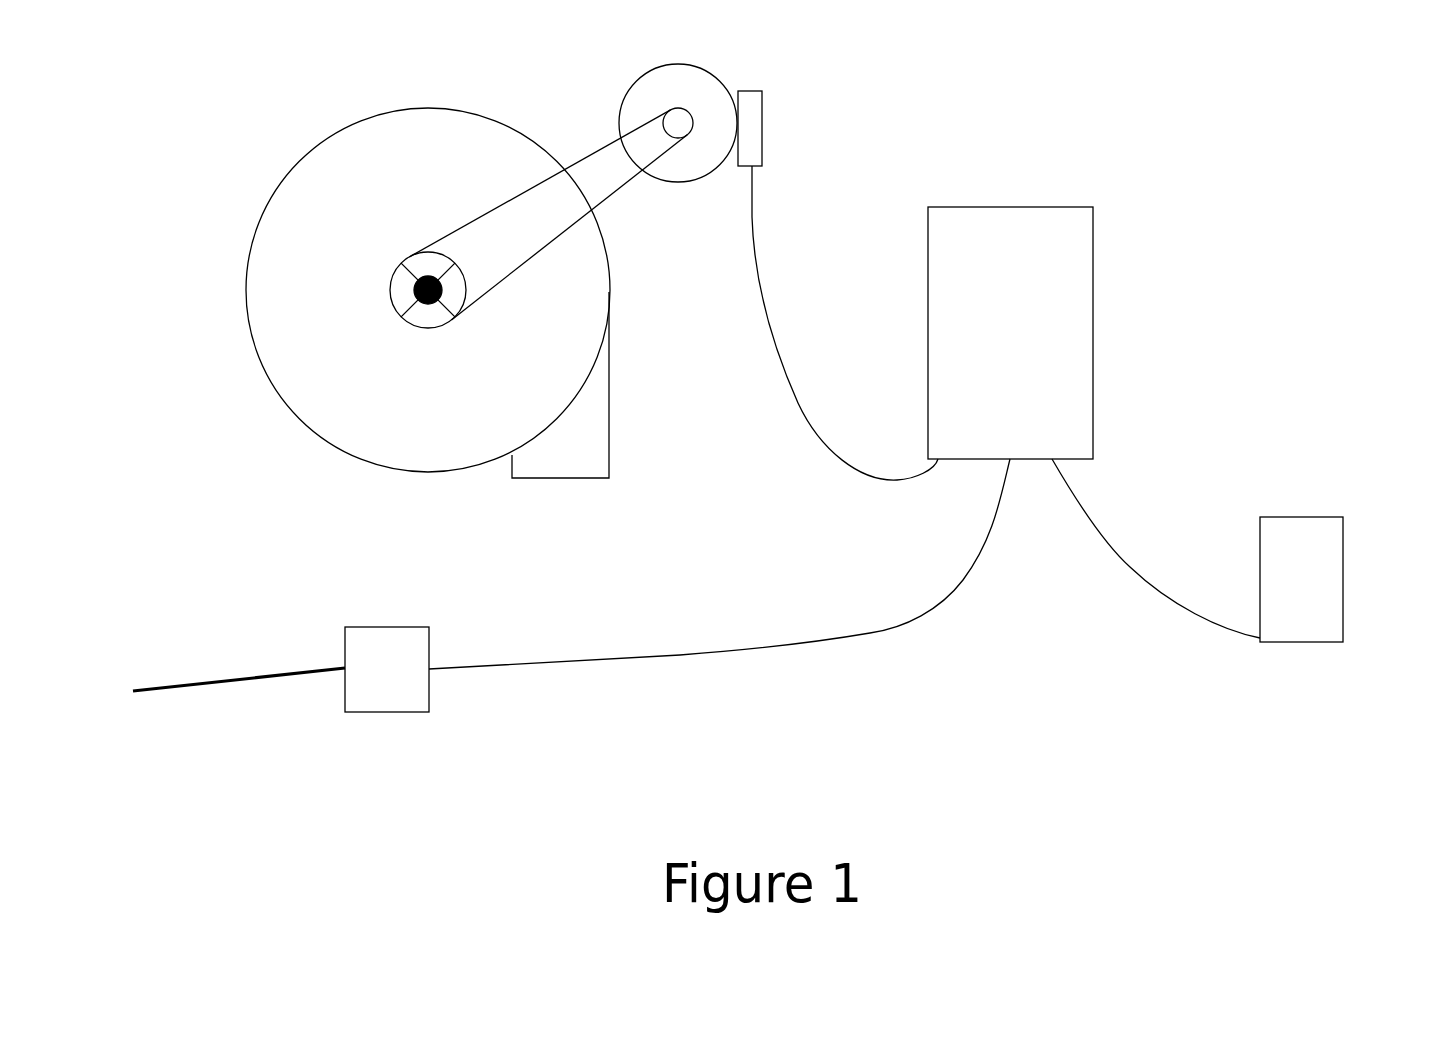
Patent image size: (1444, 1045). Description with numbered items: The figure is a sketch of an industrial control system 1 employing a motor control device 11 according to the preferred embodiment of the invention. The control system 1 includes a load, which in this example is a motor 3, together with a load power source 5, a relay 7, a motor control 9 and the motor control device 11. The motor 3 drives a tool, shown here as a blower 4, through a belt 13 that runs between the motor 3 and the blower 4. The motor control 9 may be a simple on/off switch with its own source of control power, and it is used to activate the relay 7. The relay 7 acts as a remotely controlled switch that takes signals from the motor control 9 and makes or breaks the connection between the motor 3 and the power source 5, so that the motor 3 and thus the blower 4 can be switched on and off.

The control system 1 is at (1127, 80).
The motor 3 is at (618, 100).
The blower 4 is at (335, 315).
The load power source 5 is at (1368, 663).
The relay 7 is at (820, 127).
The motor control 9 is at (465, 726).
The motor control device 11 is at (1180, 285).
The belt 13 is at (462, 225).